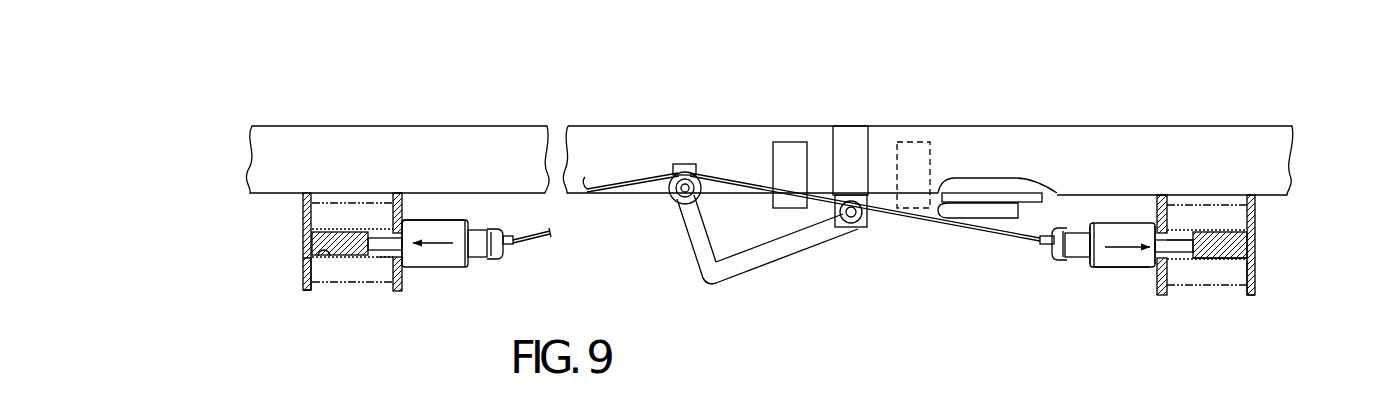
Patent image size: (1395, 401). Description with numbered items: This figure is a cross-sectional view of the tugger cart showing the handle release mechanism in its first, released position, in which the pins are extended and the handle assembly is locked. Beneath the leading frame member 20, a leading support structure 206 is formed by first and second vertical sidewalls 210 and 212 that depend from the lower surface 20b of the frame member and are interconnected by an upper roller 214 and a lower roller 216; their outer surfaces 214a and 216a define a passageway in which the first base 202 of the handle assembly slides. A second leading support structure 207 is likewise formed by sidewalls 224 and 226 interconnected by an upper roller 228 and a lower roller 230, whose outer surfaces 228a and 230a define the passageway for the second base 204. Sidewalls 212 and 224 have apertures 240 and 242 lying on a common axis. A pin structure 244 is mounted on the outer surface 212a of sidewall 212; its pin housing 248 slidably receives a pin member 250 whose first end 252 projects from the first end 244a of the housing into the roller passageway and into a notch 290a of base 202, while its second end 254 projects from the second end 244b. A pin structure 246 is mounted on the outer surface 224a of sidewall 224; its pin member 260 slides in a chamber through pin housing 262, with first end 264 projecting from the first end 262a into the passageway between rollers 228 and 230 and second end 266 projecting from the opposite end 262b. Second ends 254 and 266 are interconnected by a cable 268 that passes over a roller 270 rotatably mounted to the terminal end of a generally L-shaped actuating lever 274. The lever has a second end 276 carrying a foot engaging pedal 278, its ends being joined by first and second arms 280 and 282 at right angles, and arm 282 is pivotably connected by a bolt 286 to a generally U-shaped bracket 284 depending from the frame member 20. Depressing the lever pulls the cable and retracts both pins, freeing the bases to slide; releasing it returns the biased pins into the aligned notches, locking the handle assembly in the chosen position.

The leading frame member 20 is at (386, 121).
The lower surface 20b is at (420, 203).
The first base 202 is at (316, 238).
The second base 204 is at (1223, 260).
The leading support structure 206 is at (299, 303).
The leading support structure 207 is at (1260, 300).
The first vertical sidewall 210 is at (304, 264).
The second vertical sidewall 212 is at (401, 293).
The outer surface 212a is at (400, 198).
The upper roller 214 is at (320, 207).
The outer surface 214a is at (336, 198).
The lower roller 216 is at (338, 284).
The outer surface 216a is at (317, 258).
The first vertical sidewall 224 is at (1166, 300).
The outer surface 224a is at (1161, 196).
The second vertical sidewall 226 is at (1260, 242).
The upper roller 228 is at (1232, 218).
The outer surface 228a is at (1213, 240).
The lower roller 230 is at (1233, 273).
The outer surface 230a is at (1182, 259).
The aperture 240 is at (405, 256).
The aperture 242 is at (1157, 259).
The pin structure 244 is at (473, 270).
The first end 244a is at (395, 205).
The second end 244b is at (472, 214).
The pin structure 246 is at (1087, 272).
The pin housing 248 is at (445, 220).
The pin member 250 is at (477, 259).
The first end 252 is at (383, 231).
The second end 254 is at (488, 243).
The pin member 260 is at (1080, 220).
The pin housing 262 is at (1120, 268).
The first end 262a is at (1147, 221).
The second end 262b is at (1097, 221).
The first end 264 is at (1177, 233).
The second end 266 is at (1062, 261).
The cable 268 is at (620, 180).
The roller 270 is at (681, 165).
The actuating lever 274 is at (730, 288).
The second end 276 is at (993, 230).
The foot engaging pedal 278 is at (995, 188).
The first arm 280 is at (692, 229).
The second arm 282 is at (778, 252).
The U-shaped bracket 284 is at (869, 150).
The bolt 286 is at (843, 226).
The notch 290a is at (385, 258).